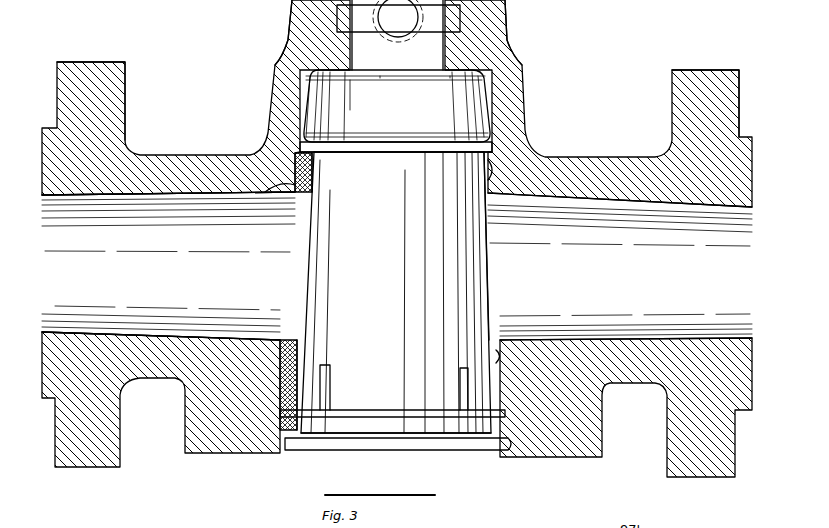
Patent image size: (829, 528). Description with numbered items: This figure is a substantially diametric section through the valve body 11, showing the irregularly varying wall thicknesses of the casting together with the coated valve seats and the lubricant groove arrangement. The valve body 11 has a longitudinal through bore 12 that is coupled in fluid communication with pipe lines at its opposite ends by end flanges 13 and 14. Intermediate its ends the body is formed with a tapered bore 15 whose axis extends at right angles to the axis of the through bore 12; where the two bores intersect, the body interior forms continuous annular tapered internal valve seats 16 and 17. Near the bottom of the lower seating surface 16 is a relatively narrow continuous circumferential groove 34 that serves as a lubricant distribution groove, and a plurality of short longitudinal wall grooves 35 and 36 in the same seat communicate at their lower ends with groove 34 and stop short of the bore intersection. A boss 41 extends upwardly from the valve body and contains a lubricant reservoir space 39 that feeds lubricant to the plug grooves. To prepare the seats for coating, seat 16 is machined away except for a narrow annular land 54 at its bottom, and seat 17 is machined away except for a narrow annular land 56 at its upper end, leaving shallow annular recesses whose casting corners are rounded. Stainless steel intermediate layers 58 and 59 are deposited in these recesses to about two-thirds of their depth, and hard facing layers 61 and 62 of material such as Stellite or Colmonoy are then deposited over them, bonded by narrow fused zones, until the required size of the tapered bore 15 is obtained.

The valve body 11 is at (550, 148).
The longitudinal through bore 12 is at (203, 337).
The end flange 13 is at (126, 78).
The end flange 14 is at (700, 70).
The tapered bore 15 is at (483, 290).
The internal valve seat 16 is at (495, 352).
The internal valve seat 17 is at (487, 185).
The circumferential groove 34 is at (355, 412).
The short wall groove 35 is at (460, 374).
The short wall groove 36 is at (331, 374).
The lubricant reservoir space 39 is at (490, 97).
The boss 41 is at (505, 36).
The annular land 54 is at (498, 452).
The annular land 56 is at (366, 150).
The stainless steel intermediate layer 58 is at (283, 340).
The stainless steel intermediate layer 59 is at (295, 192).
The hard facing layer 61 is at (304, 200).
The hard facing layer 62 is at (290, 333).